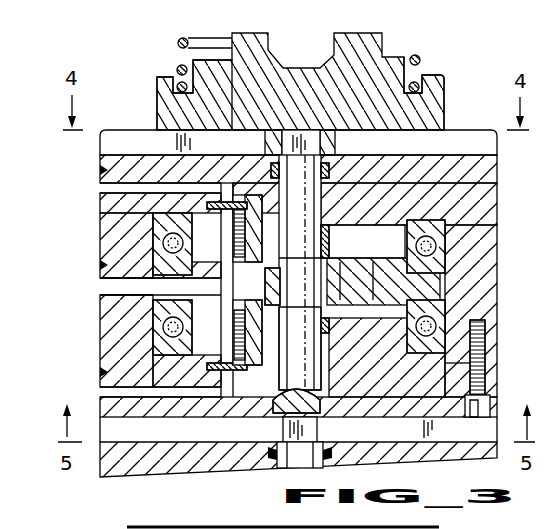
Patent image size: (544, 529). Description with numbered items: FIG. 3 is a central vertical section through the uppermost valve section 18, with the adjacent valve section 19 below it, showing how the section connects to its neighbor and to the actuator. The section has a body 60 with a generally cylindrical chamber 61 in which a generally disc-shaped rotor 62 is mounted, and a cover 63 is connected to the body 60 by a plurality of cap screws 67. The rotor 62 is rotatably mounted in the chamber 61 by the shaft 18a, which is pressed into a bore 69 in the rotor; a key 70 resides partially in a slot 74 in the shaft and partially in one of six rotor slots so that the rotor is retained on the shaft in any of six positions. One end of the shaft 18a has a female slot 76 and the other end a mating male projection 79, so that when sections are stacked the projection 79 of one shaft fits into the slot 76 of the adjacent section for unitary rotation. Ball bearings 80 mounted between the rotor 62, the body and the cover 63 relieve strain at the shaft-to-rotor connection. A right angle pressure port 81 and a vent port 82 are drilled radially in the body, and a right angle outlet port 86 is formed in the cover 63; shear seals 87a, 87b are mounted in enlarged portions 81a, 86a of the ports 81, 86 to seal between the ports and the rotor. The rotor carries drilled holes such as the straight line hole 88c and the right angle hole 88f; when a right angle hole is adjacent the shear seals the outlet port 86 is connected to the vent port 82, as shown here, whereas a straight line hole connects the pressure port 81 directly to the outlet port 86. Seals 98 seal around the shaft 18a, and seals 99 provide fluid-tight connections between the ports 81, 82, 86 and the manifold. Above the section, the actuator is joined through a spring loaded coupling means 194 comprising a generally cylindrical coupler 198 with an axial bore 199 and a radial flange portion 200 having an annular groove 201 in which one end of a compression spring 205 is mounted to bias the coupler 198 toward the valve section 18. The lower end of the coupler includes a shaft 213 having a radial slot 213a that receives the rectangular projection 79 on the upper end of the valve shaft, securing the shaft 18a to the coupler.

The valve section 18 is at (99, 153).
The shaft 18a is at (325, 190).
The valve section 19 is at (100, 477).
The body 60 is at (496, 163).
The chamber 61 is at (356, 257).
The rotor 62 is at (440, 282).
The cover 63 is at (494, 380).
The cap screws 67 is at (485, 342).
The bore 69 is at (297, 360).
The key 70 is at (300, 311).
The slot 74 is at (266, 288).
The female slot 76 is at (282, 430).
The male projection 79 is at (302, 130).
The bearings 80 is at (155, 238).
The pressure port 81 is at (100, 190).
The enlarged portion 81a is at (207, 206).
The vent port 82 is at (100, 287).
The outlet port 86 is at (100, 392).
The enlarged portion 86a is at (200, 371).
The shear seal 87a is at (253, 218).
The shear seal 87b is at (254, 348).
The straight line hole 88c is at (372, 305).
The right angle hole 88f is at (126, 341).
The seals 98 is at (330, 172).
The seals 99 is at (98, 170).
The spring loaded coupling means 194 is at (167, 43).
The coupler 198 is at (439, 85).
The axial bore 199 is at (300, 81).
The radial flange portion 200 is at (157, 106).
The annular groove 201 is at (420, 74).
The compression spring 205 is at (176, 70).
The shaft 213 is at (272, 122).
The radial slot 213a is at (328, 128).